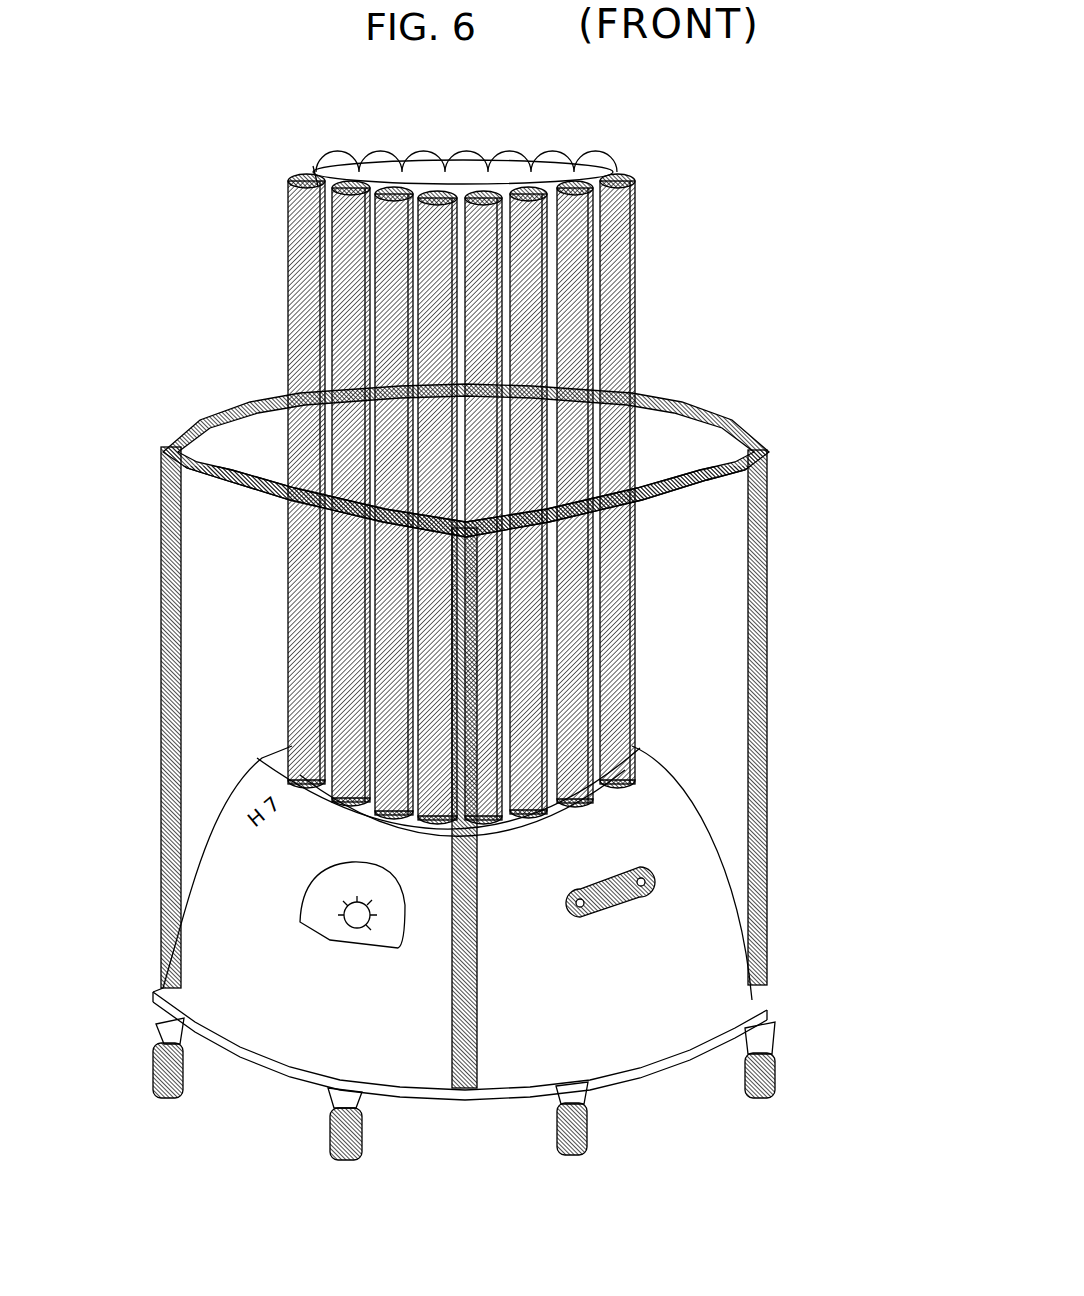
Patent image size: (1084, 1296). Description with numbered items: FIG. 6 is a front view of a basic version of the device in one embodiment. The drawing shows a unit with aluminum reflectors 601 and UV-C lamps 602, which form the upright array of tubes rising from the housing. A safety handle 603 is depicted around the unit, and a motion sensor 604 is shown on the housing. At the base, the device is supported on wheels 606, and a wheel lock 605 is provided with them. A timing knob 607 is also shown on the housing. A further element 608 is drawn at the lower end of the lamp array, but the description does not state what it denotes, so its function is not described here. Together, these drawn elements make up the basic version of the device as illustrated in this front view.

The aluminum reflectors 601 is at (633, 185).
The UV-C lamps 602 is at (625, 327).
The safety handle 603 is at (713, 477).
The motion sensor 604 is at (652, 897).
The wheel lock 605 is at (778, 1048).
The wheels 606 is at (748, 1093).
The timing knob 607 is at (335, 915).
The tube base end 608 is at (295, 785).